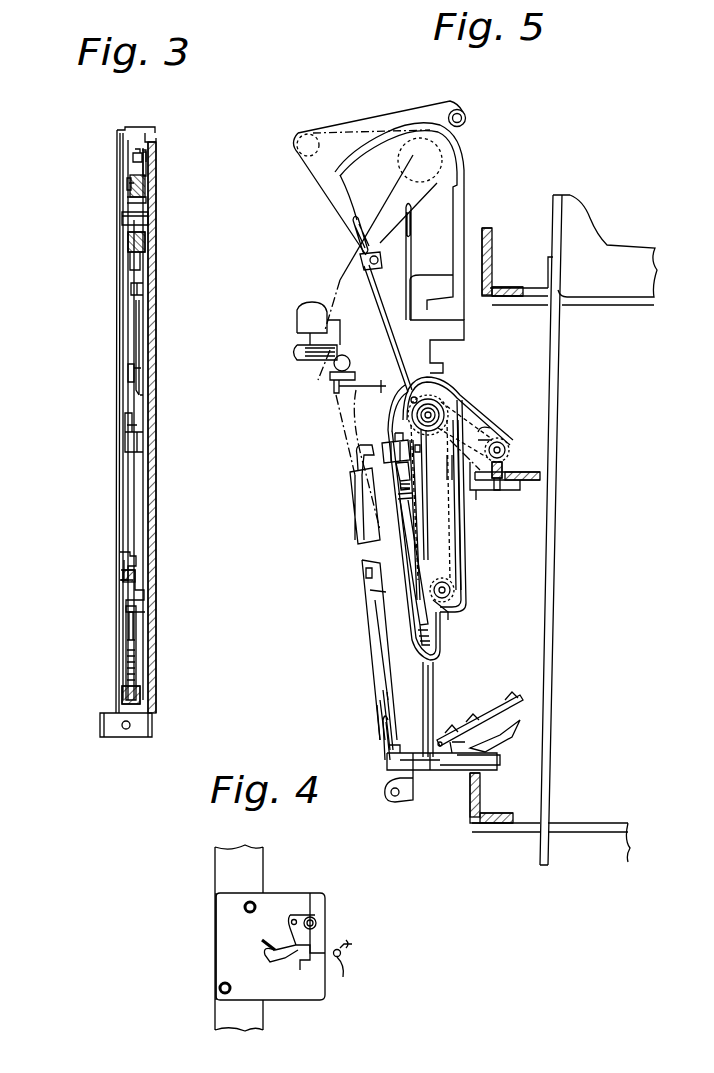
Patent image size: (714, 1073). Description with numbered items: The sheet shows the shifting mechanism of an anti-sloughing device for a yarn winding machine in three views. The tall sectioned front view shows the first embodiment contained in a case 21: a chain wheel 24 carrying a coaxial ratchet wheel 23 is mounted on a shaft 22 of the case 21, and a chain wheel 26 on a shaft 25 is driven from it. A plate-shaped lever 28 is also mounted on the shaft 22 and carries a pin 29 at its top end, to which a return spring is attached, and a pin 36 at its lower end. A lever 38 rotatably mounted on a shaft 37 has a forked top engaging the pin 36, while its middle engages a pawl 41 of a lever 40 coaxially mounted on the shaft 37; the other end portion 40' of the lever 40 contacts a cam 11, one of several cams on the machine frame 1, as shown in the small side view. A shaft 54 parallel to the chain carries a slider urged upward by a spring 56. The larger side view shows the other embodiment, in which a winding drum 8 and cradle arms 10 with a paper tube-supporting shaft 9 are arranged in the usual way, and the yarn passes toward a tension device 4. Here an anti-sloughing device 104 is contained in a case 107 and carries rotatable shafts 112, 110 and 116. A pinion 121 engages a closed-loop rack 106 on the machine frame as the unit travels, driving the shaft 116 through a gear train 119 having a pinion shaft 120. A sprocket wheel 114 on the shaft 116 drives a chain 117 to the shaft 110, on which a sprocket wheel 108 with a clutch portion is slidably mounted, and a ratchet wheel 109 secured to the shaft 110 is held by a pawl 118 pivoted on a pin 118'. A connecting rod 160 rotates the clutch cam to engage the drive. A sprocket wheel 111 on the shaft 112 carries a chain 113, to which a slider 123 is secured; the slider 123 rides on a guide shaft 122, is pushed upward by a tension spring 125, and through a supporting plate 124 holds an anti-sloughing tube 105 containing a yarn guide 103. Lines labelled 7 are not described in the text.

In FIG. 4, the machine frame 1 is at (263, 866).
In FIG. 5, the tension device 4 is at (299, 358).
In FIG. 5, the rod 7 is at (434, 690).
In FIG. 5, the winding drum 8 is at (459, 143).
In FIG. 5, the paper tube-supporting shaft 9 is at (465, 112).
In FIG. 5, the cradle arms 10 is at (313, 178).
In FIG. 5, the cam 11 is at (547, 604).
In FIG. 4, the cam 11 is at (239, 946).
In FIG. 3, the case 21 is at (155, 142).
In FIG. 3, the shaft 22 is at (122, 226).
In FIG. 3, the ratchet wheel 23 is at (130, 178).
In FIG. 3, the chain wheel 24 is at (127, 188).
In FIG. 3, the shaft 25 is at (121, 585).
In FIG. 3, the chain wheel 26 is at (120, 561).
In FIG. 3, the plate-shaped lever 28 is at (147, 169).
In FIG. 3, the pin 29 is at (131, 155).
In FIG. 3, the pin 36 is at (130, 290).
In FIG. 3, the shaft 37 is at (125, 434).
In FIG. 3, the lever 38 is at (143, 309).
In FIG. 3, the lever 40 is at (164, 348).
In FIG. 4, the end portion of lever 40' is at (313, 960).
In FIG. 3, the pawl 41 is at (128, 371).
In FIG. 3, the shaft 54 is at (133, 626).
In FIG. 3, the spring 56 is at (136, 667).
In FIG. 5, the yarn guide 103 is at (355, 478).
In FIG. 5, the anti-sloughing device 104 is at (333, 446).
In FIG. 5, the anti-sloughing tube 105 is at (356, 530).
In FIG. 5, the rack 106 is at (530, 482).
In FIG. 5, the case 107 is at (467, 562).
In FIG. 5, the sprocket wheel 108 is at (452, 410).
In FIG. 5, the ratchet wheel 109 is at (448, 398).
In FIG. 5, the shaft 110 is at (435, 495).
In FIG. 5, the sprocket wheel 111 is at (448, 610).
In FIG. 5, the shaft 112 is at (456, 596).
In FIG. 5, the chain 113 is at (458, 540).
In FIG. 5, the sprocket wheel 114 is at (503, 438).
In FIG. 5, the shaft 116 is at (513, 448).
In FIG. 5, the chain 117 is at (484, 430).
In FIG. 5, the pawl 118 is at (454, 456).
In FIG. 5, the pin 118' is at (384, 411).
In FIG. 5, the gear train 119 is at (504, 480).
In FIG. 5, the pinion shaft 120 is at (478, 492).
In FIG. 5, the pinion 121 is at (460, 475).
In FIG. 5, the guide shaft 122 is at (376, 562).
In FIG. 5, the slider 123 is at (410, 470).
In FIG. 5, the supporting plate 124 is at (386, 450).
In FIG. 5, the tension spring 125 is at (380, 600).
In FIG. 5, the connecting rod 160 is at (378, 288).